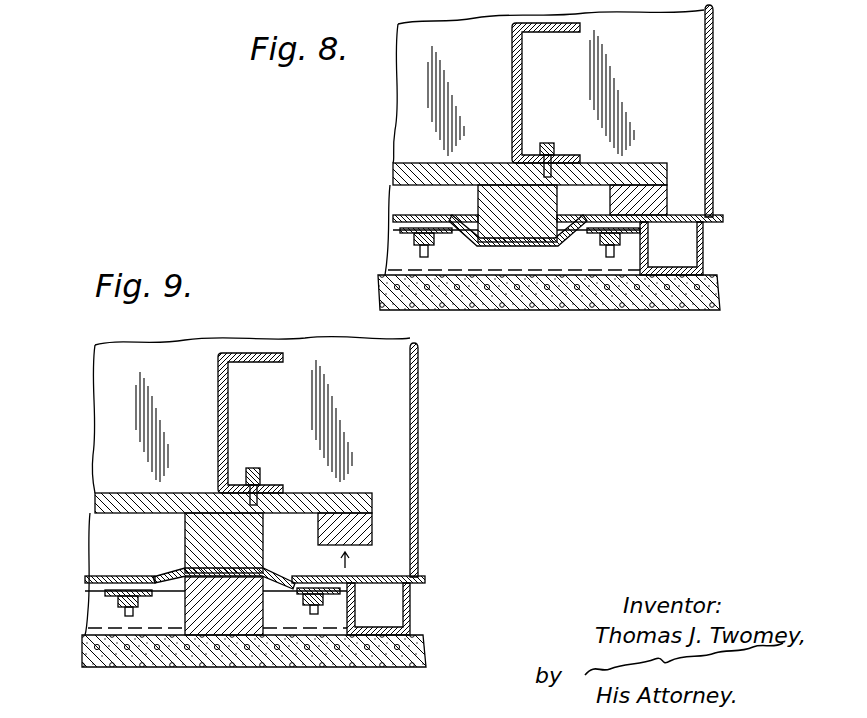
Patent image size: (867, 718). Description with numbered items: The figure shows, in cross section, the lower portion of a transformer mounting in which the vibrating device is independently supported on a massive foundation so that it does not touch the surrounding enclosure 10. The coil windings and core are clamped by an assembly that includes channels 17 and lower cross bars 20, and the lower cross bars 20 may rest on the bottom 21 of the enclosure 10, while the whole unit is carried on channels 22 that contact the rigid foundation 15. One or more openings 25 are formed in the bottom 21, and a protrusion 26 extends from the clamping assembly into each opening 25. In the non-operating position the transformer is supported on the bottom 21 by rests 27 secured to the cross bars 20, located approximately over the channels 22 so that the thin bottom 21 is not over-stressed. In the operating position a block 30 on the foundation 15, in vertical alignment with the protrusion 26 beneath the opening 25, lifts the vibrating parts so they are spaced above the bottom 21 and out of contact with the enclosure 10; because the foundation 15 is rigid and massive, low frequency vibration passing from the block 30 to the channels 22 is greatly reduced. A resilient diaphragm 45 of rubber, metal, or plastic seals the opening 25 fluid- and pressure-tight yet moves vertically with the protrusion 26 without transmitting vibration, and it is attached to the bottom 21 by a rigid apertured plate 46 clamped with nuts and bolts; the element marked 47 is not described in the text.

In FIG. 8, the enclosure 10 is at (713, 92).
In FIG. 9, the enclosure 10 is at (418, 452).
In FIG. 8, the foundation 15 is at (717, 292).
In FIG. 9, the foundation 15 is at (423, 646).
In FIG. 8, the channels 17 is at (525, 106).
In FIG. 9, the channels 17 is at (230, 413).
In FIG. 8, the lower cross bars 20 is at (667, 168).
In FIG. 9, the lower cross bars 20 is at (372, 500).
In FIG. 8, the bottom of the enclosure 21 is at (723, 220).
In FIG. 9, the bottom of the enclosure 21 is at (425, 580).
In FIG. 8, the channels 22 is at (703, 252).
In FIG. 9, the channels 22 is at (410, 612).
In FIG. 8, the openings 25 is at (455, 217).
In FIG. 9, the openings 25 is at (152, 578).
In FIG. 8, the protrusion 26 is at (448, 215).
In FIG. 9, the protrusion 26 is at (182, 550).
In FIG. 8, the rests 27 is at (667, 202).
In FIG. 9, the rests 27 is at (372, 532).
In FIG. 9, the block 30 is at (185, 618).
In FIG. 8, the resilient diaphragm 45 is at (472, 246).
In FIG. 9, the resilient diaphragm 45 is at (278, 574).
In FIG. 8, the rigid apertured plate 46 is at (414, 245).
In FIG. 9, the rigid apertured plate 46 is at (118, 599).
In FIG. 8, the washer plate 47 is at (400, 231).